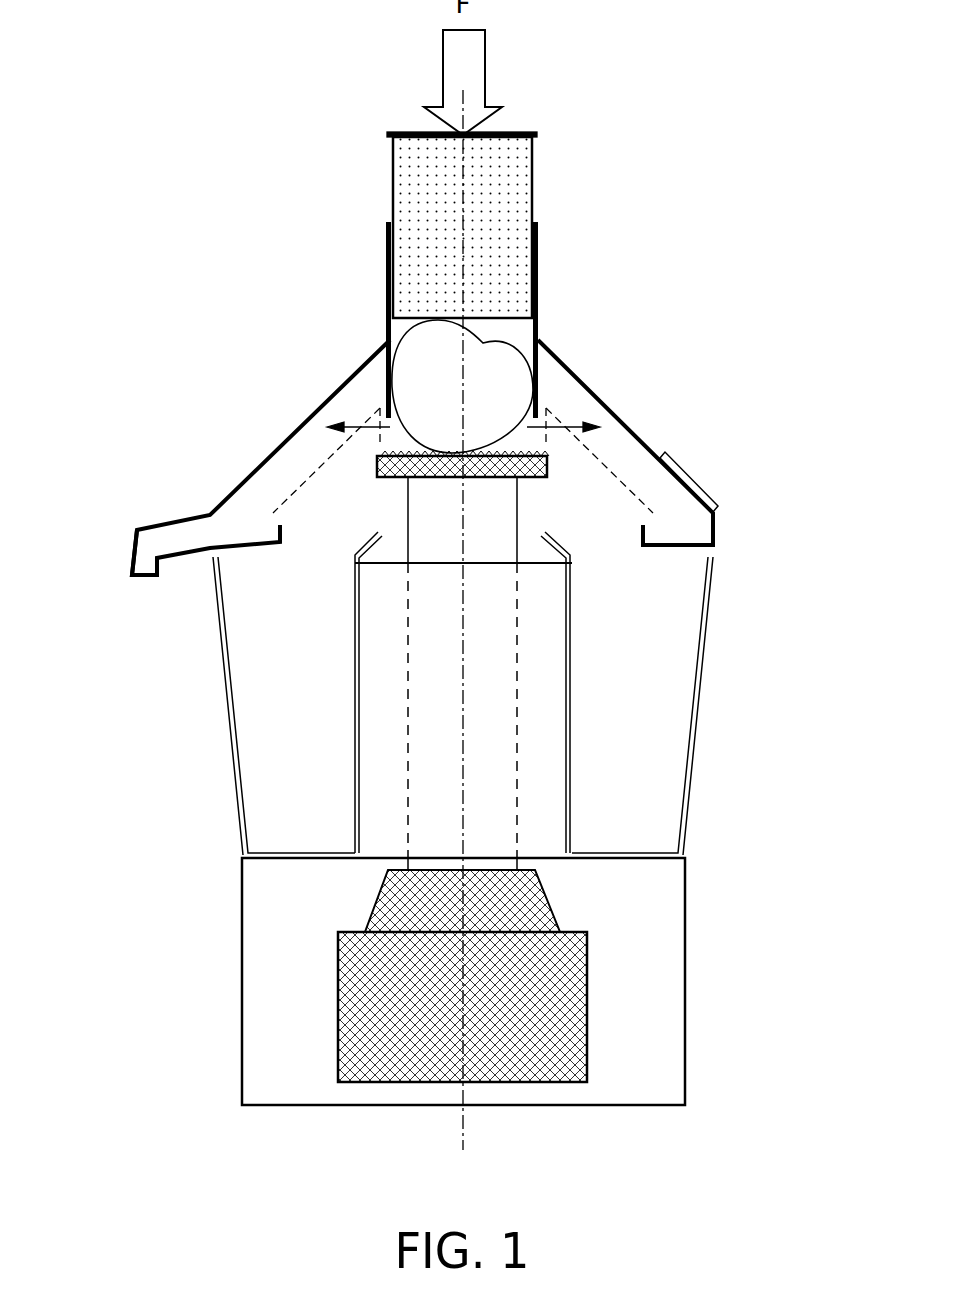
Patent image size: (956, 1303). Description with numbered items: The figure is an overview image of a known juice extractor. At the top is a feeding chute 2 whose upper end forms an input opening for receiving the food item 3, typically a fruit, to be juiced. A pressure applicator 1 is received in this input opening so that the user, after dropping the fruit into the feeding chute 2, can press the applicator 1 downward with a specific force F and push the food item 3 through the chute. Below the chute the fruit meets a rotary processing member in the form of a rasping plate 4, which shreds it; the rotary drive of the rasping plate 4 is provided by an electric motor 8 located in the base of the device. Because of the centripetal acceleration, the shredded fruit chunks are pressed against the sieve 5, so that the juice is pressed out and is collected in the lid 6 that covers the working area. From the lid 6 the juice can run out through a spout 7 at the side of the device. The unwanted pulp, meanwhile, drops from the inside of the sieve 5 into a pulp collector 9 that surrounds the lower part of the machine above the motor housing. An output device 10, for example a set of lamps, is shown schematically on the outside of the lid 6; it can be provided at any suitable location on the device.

The pressure applicator 1 is at (532, 184).
The feeding chute 2 is at (540, 252).
The food item 3 is at (527, 362).
The rasping plate 4 is at (377, 463).
The sieve 5 is at (285, 502).
The lid 6 is at (318, 408).
The spout 7 is at (132, 540).
The electric motor 8 is at (587, 1012).
The pulp collector 9 is at (700, 706).
The output device 10 is at (693, 475).